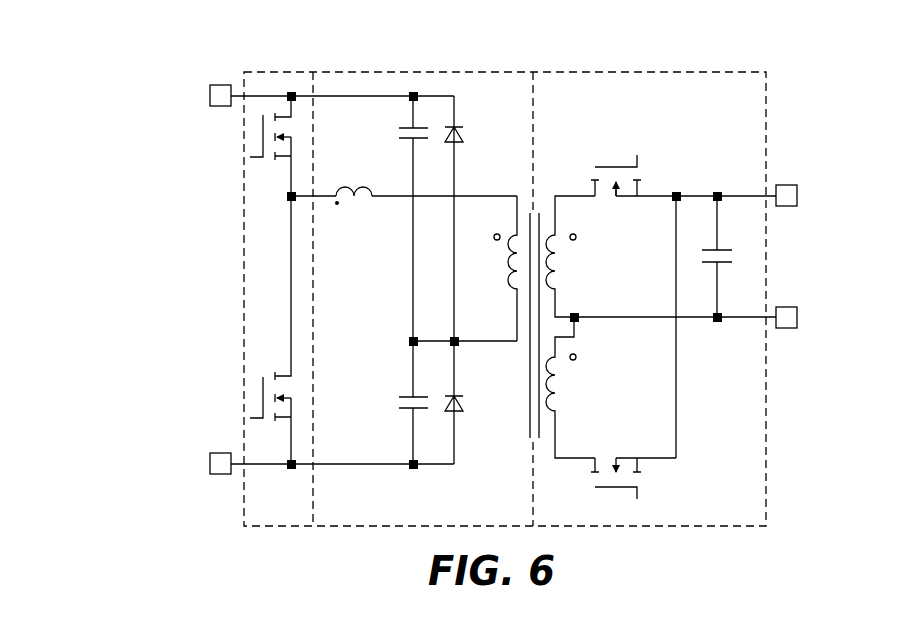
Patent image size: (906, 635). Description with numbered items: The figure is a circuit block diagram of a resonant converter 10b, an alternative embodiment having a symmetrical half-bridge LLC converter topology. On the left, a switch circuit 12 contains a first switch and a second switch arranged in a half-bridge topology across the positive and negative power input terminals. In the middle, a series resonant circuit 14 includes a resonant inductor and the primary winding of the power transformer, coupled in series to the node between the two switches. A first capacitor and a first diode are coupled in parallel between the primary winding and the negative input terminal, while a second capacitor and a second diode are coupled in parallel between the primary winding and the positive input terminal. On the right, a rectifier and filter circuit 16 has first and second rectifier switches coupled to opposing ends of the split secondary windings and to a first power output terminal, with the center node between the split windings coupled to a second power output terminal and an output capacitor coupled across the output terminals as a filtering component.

The resonant converter 10b is at (121, 87).
The switch circuit 12 is at (273, 71).
The series resonant circuit 14 is at (449, 71).
The rectifier and filter circuit 16 is at (627, 71).